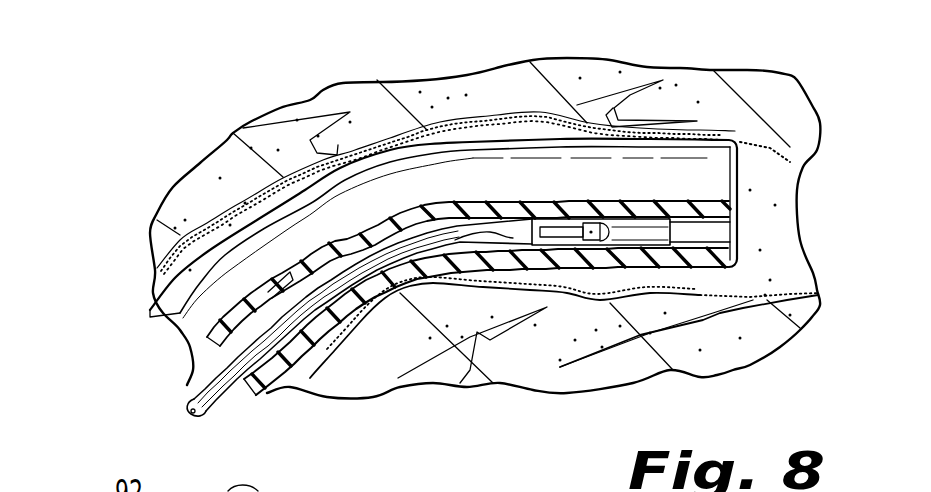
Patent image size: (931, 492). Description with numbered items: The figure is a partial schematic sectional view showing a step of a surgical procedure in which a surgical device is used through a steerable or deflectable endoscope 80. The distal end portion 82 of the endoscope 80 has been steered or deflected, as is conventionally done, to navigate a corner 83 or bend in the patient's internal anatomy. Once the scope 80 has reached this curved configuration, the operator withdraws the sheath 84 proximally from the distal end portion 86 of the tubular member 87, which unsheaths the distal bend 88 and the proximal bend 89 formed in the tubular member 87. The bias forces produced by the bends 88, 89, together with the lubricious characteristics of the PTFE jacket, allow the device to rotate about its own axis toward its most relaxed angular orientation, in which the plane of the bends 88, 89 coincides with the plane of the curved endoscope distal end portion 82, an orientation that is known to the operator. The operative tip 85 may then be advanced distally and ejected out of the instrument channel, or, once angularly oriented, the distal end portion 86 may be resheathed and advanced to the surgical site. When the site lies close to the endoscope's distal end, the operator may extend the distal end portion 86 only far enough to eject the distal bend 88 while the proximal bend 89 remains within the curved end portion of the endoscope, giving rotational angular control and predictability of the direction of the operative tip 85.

The endoscope 80 is at (183, 300).
The distal end portion 82 is at (357, 210).
The corner 83 is at (420, 282).
The sheath 84 is at (648, 248).
The operative tip 85 is at (597, 225).
The distal end portion 86 is at (417, 240).
The tubular member 87 is at (187, 385).
The distal bend 88 is at (485, 227).
The proximal bend 89 is at (267, 310).